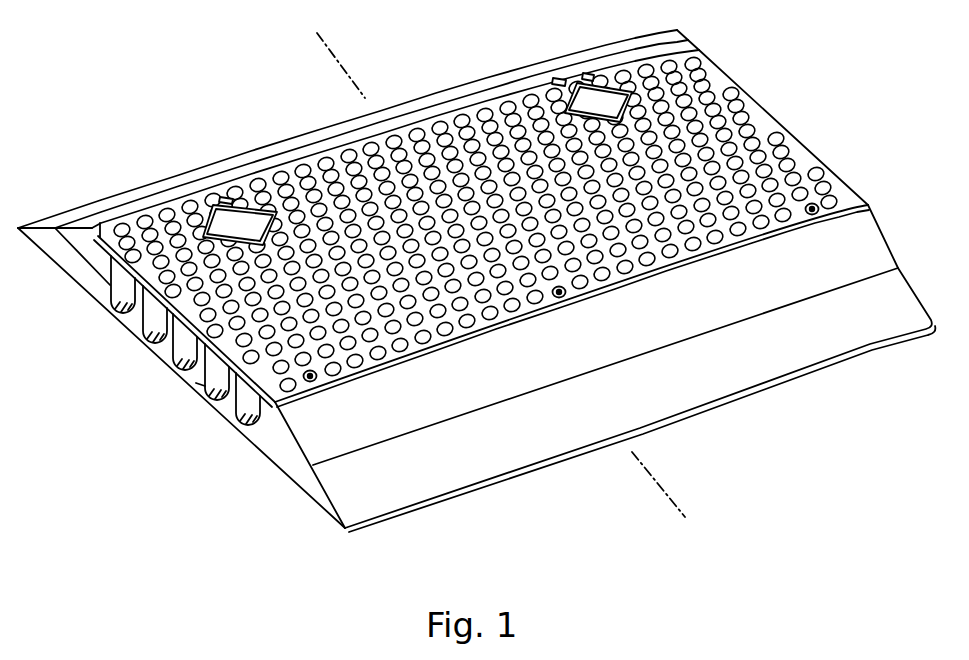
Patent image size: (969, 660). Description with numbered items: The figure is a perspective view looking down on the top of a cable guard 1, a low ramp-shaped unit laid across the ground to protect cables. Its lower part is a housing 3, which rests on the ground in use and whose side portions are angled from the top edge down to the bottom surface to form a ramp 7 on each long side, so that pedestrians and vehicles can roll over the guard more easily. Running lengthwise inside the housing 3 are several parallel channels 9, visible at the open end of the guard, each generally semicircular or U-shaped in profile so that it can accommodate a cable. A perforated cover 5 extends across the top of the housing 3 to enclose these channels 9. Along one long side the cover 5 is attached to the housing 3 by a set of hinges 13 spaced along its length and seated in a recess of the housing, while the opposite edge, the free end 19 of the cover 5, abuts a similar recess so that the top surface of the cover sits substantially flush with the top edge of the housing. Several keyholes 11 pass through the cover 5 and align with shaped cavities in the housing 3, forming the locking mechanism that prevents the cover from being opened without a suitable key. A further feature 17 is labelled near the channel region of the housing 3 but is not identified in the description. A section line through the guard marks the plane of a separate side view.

The cable guard 1 is at (476, 285).
The housing 3 is at (98, 296).
The cover 5 is at (727, 100).
The ramp 7 is at (150, 190).
The channels 9 is at (190, 358).
The keyhole 11 is at (820, 209).
The hinges 13 is at (97, 220).
The support surface 17 is at (200, 383).
The free end 19 is at (855, 194).